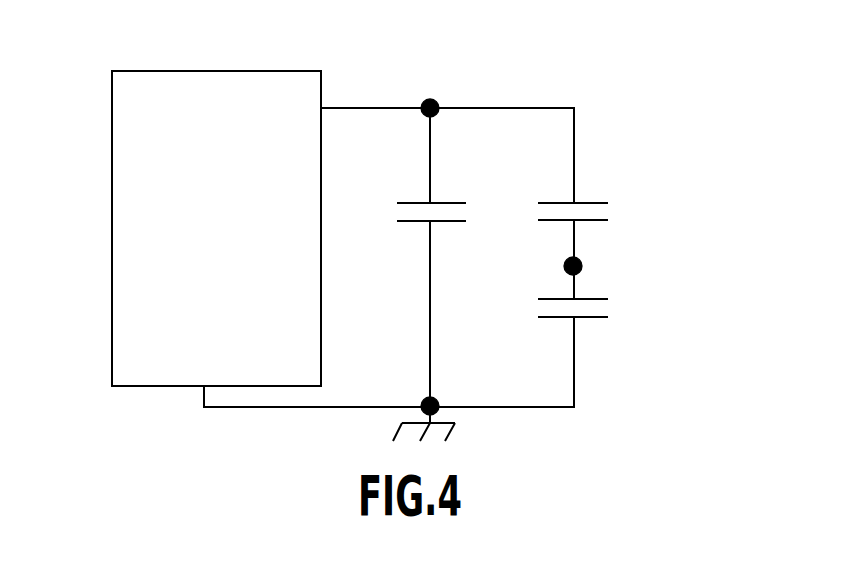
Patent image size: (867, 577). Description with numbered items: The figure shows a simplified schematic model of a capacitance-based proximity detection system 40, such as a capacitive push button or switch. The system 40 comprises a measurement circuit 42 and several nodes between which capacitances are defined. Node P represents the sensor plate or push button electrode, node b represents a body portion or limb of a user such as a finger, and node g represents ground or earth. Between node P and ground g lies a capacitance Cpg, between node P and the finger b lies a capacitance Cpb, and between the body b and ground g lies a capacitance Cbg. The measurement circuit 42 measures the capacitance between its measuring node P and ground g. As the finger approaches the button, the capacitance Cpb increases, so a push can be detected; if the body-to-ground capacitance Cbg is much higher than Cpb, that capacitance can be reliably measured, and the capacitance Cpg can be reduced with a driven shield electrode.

The capacitance-based proximity detection system 40 is at (450, 237).
The measurement circuit 42 is at (112, 255).
The sensor plate node P is at (430, 91).
The body portion node b is at (584, 260).
The ground node g is at (428, 406).
The capacitance between sensor node and ground Cpg is at (455, 208).
The capacitance between sensor node and finger Cpb is at (598, 208).
The capacitance between body and ground Cbg is at (598, 307).